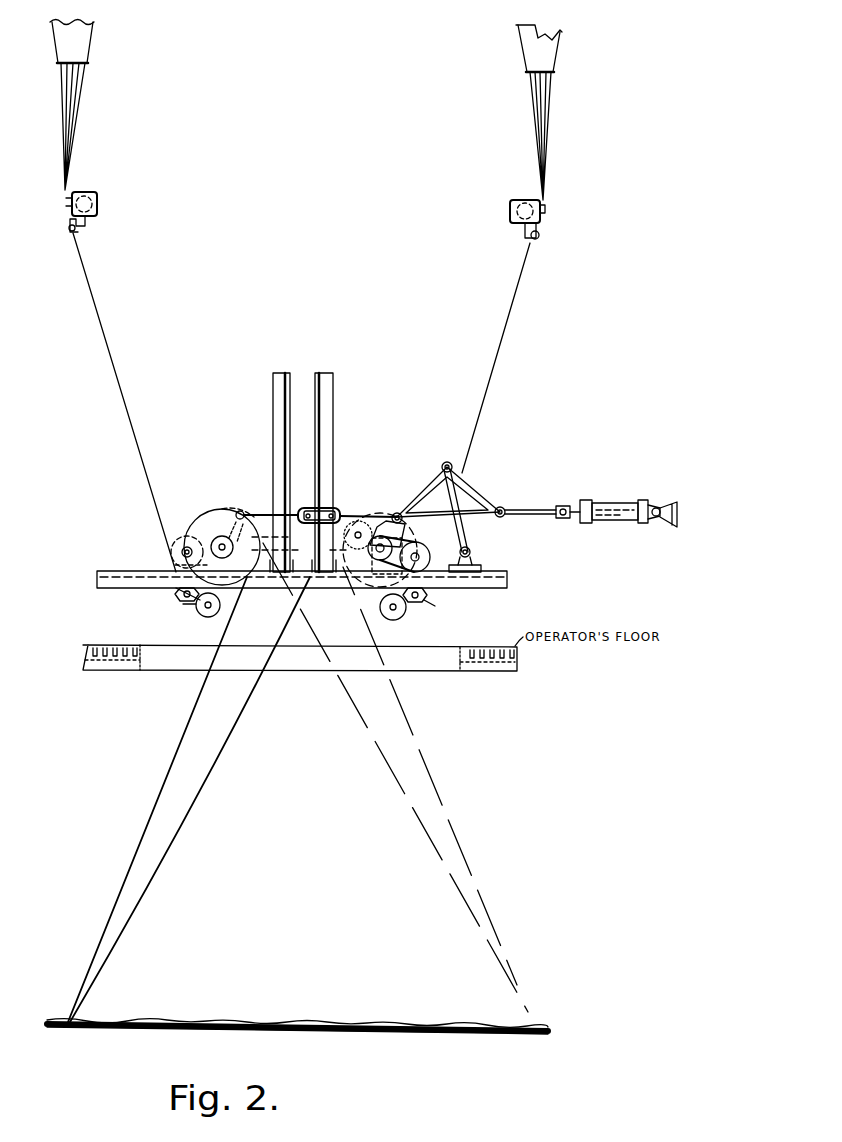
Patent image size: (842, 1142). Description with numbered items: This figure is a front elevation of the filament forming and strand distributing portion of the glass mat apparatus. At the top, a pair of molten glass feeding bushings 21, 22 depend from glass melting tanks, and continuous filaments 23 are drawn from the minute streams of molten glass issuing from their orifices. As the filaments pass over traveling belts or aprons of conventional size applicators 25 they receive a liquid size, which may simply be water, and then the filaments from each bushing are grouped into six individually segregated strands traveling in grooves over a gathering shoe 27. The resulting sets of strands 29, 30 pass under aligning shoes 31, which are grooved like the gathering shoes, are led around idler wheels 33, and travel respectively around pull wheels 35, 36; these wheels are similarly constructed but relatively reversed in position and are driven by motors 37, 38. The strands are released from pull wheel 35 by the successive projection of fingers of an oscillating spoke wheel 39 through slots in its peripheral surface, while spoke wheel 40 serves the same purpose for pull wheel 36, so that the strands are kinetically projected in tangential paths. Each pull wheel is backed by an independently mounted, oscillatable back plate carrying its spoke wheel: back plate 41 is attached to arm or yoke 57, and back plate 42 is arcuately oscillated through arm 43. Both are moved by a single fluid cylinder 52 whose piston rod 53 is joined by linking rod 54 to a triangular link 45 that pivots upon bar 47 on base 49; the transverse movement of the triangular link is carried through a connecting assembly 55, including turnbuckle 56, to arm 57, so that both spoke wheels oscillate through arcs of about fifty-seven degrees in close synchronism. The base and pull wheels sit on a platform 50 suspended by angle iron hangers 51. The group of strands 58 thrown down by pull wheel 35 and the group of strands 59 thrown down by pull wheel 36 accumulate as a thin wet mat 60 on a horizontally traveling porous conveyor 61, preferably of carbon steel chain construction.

The molten glass feeding bushing 21 is at (93, 45).
The molten glass feeding bushing 22 is at (518, 50).
The continuous filaments 23 is at (80, 96).
The size applicator 25 is at (97, 204).
The gathering shoe 27 is at (79, 233).
The set of strands 29 is at (106, 343).
The set of strands 30 is at (503, 330).
The aligning shoe 31 is at (175, 596).
The idler wheel 33 is at (197, 608).
The pull wheel 35 is at (190, 510).
The pull wheel 36 is at (372, 505).
The motor 37 is at (176, 532).
The motor 38 is at (422, 571).
The oscillating spoke wheel 39 is at (292, 537).
The spoke wheel 40 is at (328, 552).
The back plate 41 is at (221, 509).
The back plate 42 is at (358, 558).
The arm 43 is at (390, 500).
The triangular link 45 is at (428, 480).
The bar 47 is at (465, 520).
The base 49 is at (480, 572).
The platform 50 is at (507, 573).
The angle iron hanger 51 is at (273, 420).
The fluid cylinder 52 is at (615, 500).
The piston rod 53 is at (575, 500).
The linking rod 54 is at (540, 510).
The connecting assembly 55 is at (274, 512).
The turnbuckle 56 is at (306, 507).
The arm 57 is at (242, 509).
The group of strands 58 is at (190, 712).
The group of strands 59 is at (243, 728).
The thin wet mat 60 is at (290, 1010).
The porous conveyor 61 is at (352, 1035).